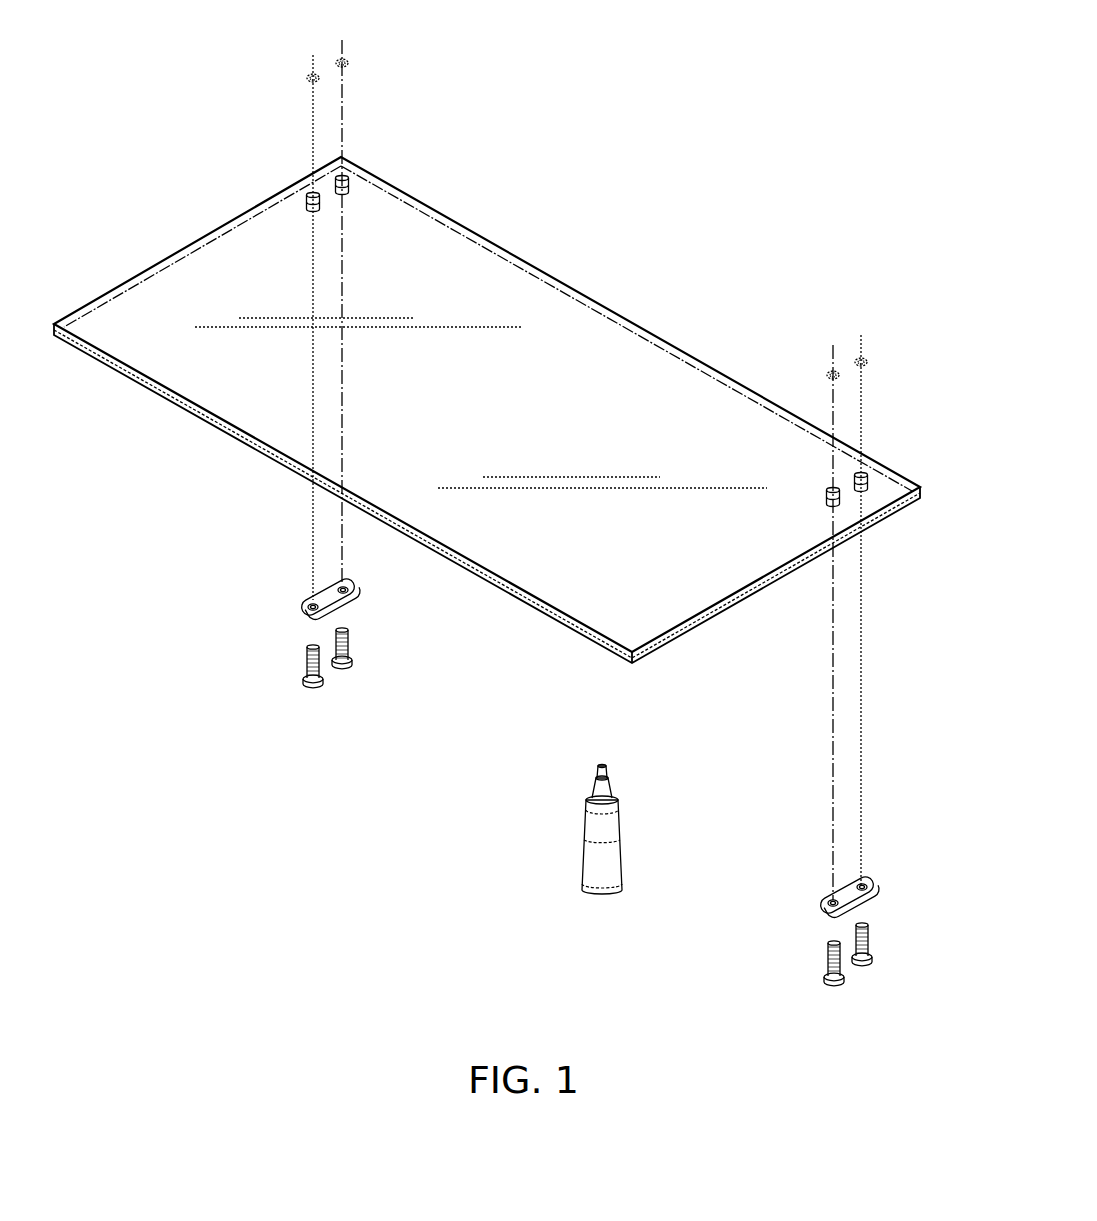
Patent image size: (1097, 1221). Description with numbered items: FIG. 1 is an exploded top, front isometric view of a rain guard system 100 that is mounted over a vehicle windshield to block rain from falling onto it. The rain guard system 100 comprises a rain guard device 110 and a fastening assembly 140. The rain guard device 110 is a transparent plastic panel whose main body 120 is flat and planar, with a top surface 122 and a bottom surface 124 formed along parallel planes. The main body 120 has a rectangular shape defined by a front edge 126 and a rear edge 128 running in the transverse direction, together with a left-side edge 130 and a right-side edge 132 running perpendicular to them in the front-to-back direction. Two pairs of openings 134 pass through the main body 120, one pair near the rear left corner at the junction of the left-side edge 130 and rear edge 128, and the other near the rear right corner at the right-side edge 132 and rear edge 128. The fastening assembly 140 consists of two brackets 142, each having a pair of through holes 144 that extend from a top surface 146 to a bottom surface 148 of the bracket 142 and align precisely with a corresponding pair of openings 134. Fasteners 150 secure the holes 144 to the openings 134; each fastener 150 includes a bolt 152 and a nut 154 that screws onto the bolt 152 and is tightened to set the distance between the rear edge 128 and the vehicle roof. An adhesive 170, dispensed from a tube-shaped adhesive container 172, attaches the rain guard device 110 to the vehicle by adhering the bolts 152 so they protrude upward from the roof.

The rain guard system 100 is at (528, 52).
The rain guard device 110 is at (197, 427).
The main body 120 is at (503, 240).
The top surface 122 is at (585, 296).
The bottom surface 124 is at (665, 645).
The front edge 126 is at (108, 370).
The rear edge 128 is at (450, 210).
The left-side edge 130 is at (92, 290).
The right-side edge 132 is at (882, 520).
The openings 134 is at (306, 194).
The fastening assembly 140 is at (560, 749).
The bracket 142 is at (360, 598).
The through holes 144 is at (310, 604).
The top surface of bracket 146 is at (320, 590).
The bottom surface of bracket 148 is at (303, 612).
The fasteners 150 is at (589, 830).
The bolt 152 is at (307, 668).
The nut 154 is at (306, 78).
The adhesive 170 is at (546, 830).
The adhesive container 172 is at (577, 863).